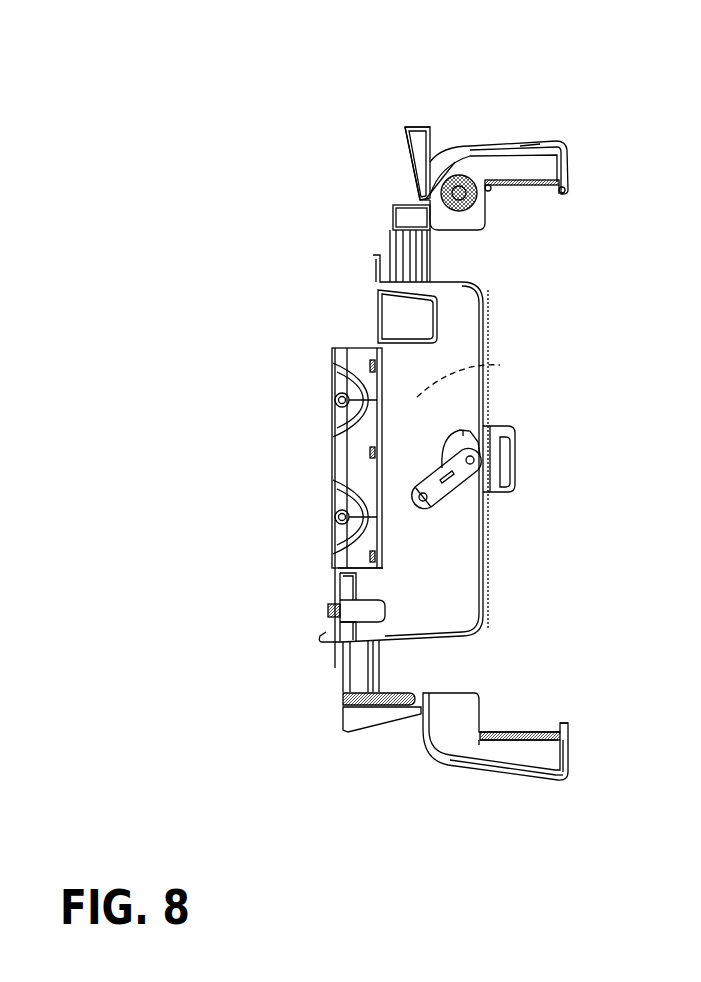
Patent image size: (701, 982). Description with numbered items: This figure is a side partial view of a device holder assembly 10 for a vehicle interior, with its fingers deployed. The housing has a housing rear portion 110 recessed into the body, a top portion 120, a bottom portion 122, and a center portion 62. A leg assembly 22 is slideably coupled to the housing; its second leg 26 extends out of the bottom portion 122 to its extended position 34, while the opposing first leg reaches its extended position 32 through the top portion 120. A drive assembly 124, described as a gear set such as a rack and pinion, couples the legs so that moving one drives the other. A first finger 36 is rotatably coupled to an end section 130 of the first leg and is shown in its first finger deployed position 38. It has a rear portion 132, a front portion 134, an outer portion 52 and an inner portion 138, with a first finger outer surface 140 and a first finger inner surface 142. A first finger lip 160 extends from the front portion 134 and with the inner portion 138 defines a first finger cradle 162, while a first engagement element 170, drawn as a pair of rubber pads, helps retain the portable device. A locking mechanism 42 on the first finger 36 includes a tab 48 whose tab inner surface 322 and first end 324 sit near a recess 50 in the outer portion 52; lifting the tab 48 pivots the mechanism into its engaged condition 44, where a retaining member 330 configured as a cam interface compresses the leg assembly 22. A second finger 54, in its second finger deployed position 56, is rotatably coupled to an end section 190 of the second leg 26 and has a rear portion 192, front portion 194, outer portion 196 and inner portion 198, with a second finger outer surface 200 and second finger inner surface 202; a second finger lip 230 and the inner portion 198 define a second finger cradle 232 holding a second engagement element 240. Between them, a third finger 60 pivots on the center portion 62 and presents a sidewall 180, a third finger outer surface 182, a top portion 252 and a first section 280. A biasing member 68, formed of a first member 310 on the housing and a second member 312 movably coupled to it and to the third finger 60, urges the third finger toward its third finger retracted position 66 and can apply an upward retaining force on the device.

The device holder assembly 10 is at (333, 180).
The leg assembly 22 is at (310, 407).
The second leg 26 is at (387, 249).
The extended position 32 is at (410, 232).
The extended position 34 is at (343, 682).
The first finger 36 is at (467, 142).
The first finger deployed position 38 is at (490, 143).
The locking mechanism 42 is at (410, 127).
The engaged condition 44 is at (406, 150).
The tab 48 is at (422, 123).
The recess 50 is at (517, 145).
The outer portion 52 is at (547, 140).
The second finger 54 is at (425, 752).
The second finger deployed position 56 is at (458, 768).
The third finger 60 is at (512, 462).
The center portion 62 is at (360, 472).
The third finger retracted position 66 is at (512, 480).
The biasing member 68 is at (345, 485).
The housing rear portion 110 is at (390, 437).
The top portion 120 is at (372, 278).
The bottom portion 122 is at (327, 648).
The drive assembly 124 is at (500, 365).
The end section 130 is at (392, 213).
The rear portion 132 is at (420, 197).
The front portion 134 is at (575, 156).
The inner portion 138 is at (547, 190).
The first finger outer surface 140 is at (562, 140).
The first finger inner surface 142 is at (517, 190).
The first finger lip 160 is at (568, 192).
The first finger cradle 162 is at (530, 190).
The first engagement element 170 is at (497, 190).
The sidewall 180 is at (492, 425).
The third finger outer surface 182 is at (510, 432).
The end section 190 is at (347, 703).
The rear portion 192 is at (410, 722).
The front portion 194 is at (567, 760).
The outer portion 196 is at (500, 775).
The inner portion 198 is at (529, 732).
The second finger outer surface 200 is at (543, 778).
The second finger inner surface 202 is at (516, 732).
The second finger lip 230 is at (562, 724).
The second finger cradle 232 is at (492, 732).
The second engagement element 240 is at (541, 732).
The top portion 252 is at (512, 490).
The first section 280 is at (488, 493).
The first member 310 is at (423, 510).
The second member 312 is at (462, 430).
The tab inner surface 322 is at (447, 140).
The first end 324 is at (438, 132).
The retaining member 330 is at (458, 240).